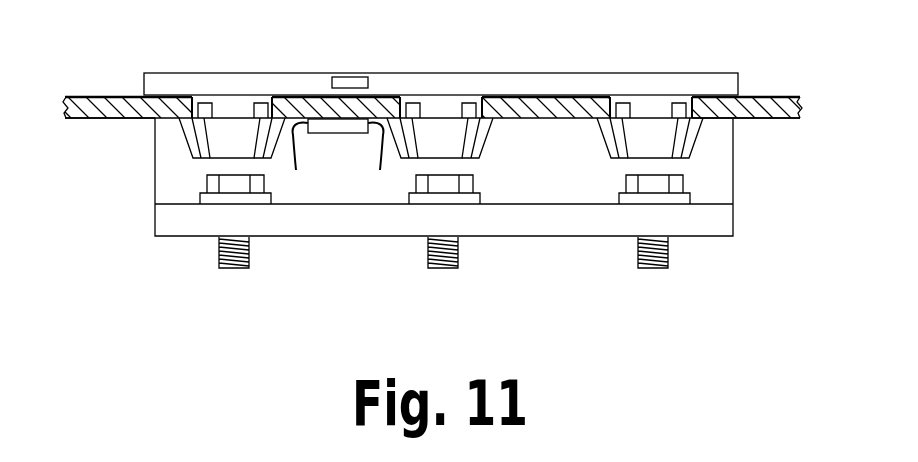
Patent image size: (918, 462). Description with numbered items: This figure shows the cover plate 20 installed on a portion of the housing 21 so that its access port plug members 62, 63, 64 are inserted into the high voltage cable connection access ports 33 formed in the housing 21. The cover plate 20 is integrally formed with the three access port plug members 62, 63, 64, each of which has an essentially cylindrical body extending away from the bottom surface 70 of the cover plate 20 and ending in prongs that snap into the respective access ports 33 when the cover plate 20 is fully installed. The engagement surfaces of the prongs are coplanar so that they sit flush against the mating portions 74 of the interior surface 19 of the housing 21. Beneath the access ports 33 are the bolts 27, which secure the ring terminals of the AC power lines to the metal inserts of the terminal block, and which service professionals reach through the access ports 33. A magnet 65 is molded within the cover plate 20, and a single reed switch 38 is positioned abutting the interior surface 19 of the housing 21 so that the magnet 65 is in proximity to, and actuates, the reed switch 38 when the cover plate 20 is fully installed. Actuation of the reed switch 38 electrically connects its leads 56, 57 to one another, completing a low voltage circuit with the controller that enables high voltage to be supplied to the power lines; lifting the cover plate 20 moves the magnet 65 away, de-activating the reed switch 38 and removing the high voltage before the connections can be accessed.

The interior surface 19 is at (110, 119).
The cover plate 20 is at (740, 86).
The housing 21 is at (83, 97).
The bolts 27 is at (218, 253).
The high voltage cable connection access ports 33 is at (287, 94).
The reed switch 38 is at (318, 133).
The lead 56 is at (296, 166).
The lead 57 is at (376, 150).
The access port plug member 62 is at (232, 148).
The access port plug member 63 is at (435, 133).
The access port plug member 64 is at (650, 137).
The magnet 65 is at (357, 80).
The bottom surface 70 is at (719, 100).
The mating portions 74 is at (280, 124).